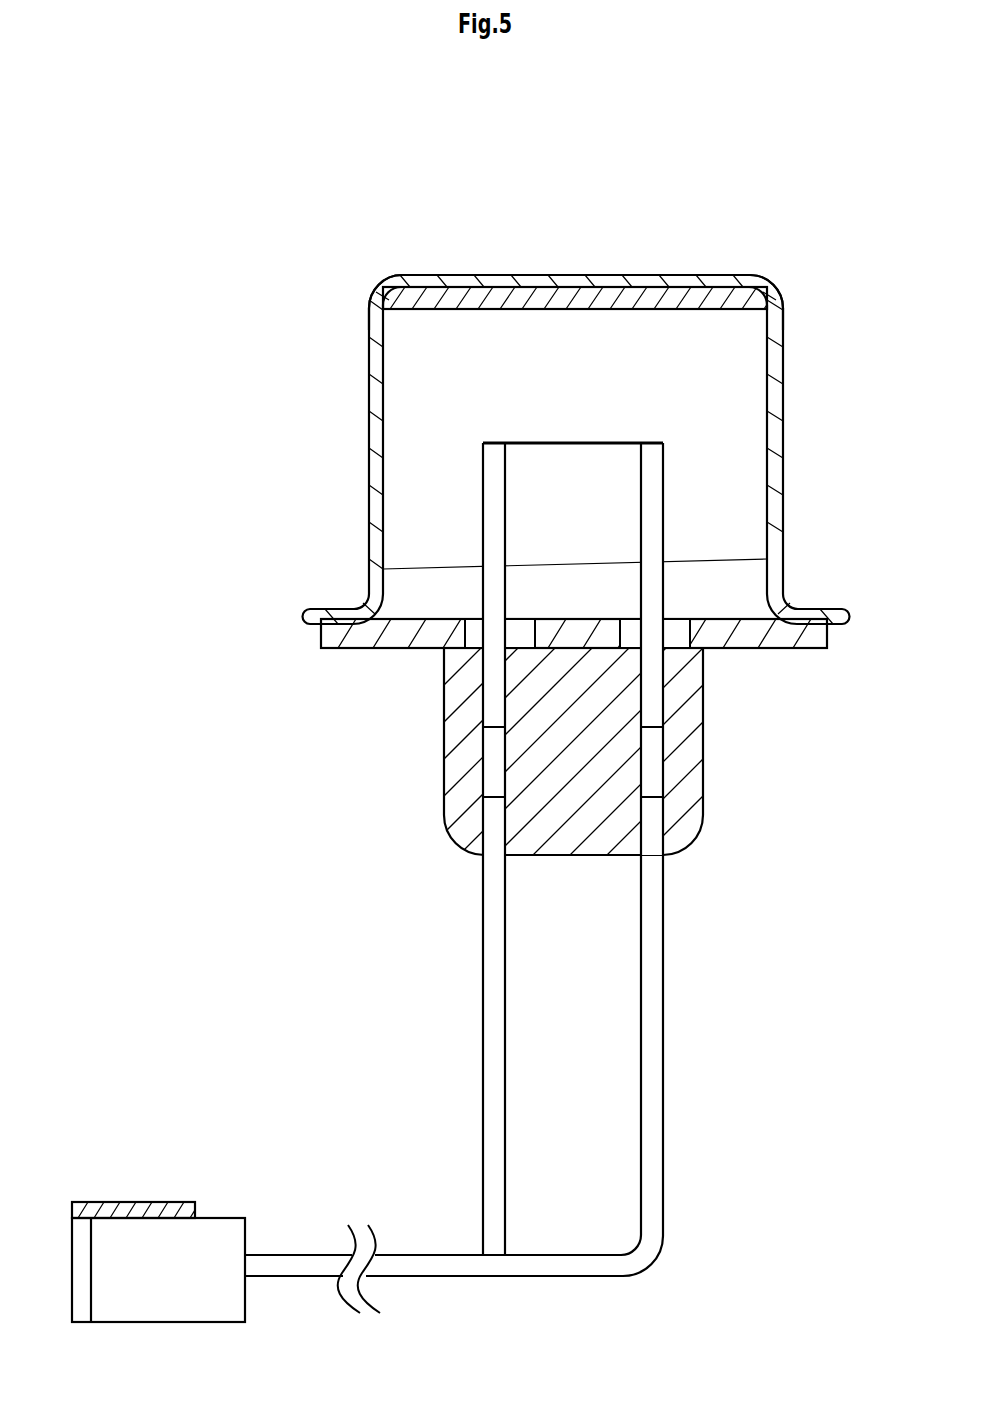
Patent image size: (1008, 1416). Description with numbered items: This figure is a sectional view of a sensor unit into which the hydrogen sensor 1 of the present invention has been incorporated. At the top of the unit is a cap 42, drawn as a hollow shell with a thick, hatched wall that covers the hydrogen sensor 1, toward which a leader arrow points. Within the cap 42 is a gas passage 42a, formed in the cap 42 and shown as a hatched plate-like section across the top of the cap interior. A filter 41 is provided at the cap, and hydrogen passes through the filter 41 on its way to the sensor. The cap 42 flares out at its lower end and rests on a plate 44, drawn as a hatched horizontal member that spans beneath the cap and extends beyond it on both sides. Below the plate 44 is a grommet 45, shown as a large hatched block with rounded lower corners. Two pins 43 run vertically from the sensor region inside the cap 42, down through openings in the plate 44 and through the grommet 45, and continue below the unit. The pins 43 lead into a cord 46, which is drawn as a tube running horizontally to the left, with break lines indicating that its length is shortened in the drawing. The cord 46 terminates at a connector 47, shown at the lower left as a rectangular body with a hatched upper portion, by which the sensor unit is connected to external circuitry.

The hydrogen sensor 1 is at (526, 441).
The filter 41 is at (748, 292).
The cap 42 is at (775, 370).
The gas passage 42a is at (578, 282).
The pin 43 is at (656, 527).
The plate 44 is at (749, 636).
The grommet 45 is at (688, 813).
The cord 46 is at (435, 1265).
The connector 47 is at (162, 1210).